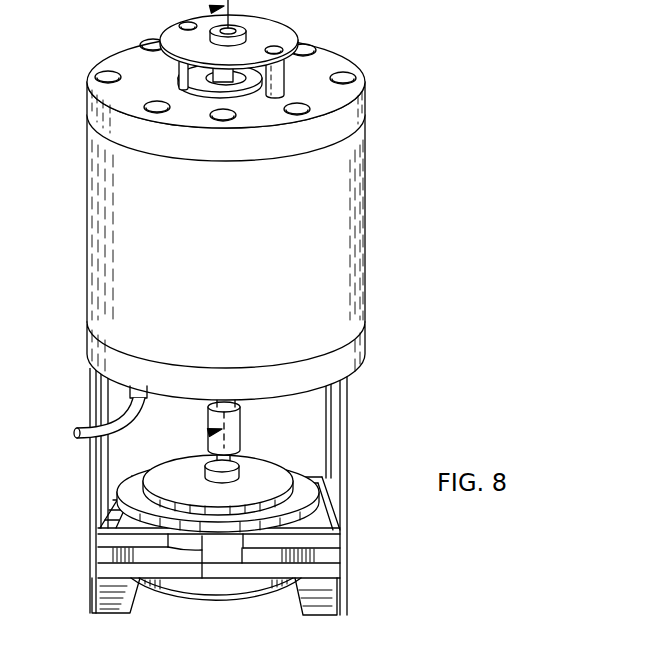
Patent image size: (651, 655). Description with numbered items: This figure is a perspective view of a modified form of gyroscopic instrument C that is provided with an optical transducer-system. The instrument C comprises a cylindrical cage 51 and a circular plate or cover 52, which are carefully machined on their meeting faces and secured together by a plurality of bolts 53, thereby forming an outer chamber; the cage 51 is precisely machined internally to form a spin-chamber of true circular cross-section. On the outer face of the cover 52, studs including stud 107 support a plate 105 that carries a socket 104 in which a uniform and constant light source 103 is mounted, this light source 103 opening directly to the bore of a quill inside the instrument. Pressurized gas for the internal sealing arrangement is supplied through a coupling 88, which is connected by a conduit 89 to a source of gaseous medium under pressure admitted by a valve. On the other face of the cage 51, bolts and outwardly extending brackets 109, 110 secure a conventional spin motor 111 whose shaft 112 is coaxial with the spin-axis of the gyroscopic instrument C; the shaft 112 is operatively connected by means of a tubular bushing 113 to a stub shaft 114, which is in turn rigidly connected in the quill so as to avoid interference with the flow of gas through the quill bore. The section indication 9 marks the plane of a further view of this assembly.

The section line 9- 9 is at (211, 9).
The gyroscopic instrument C is at (268, 218).
The cylindrical cage 51 is at (356, 273).
The circular plate or cover 52 is at (367, 104).
The bolts 53 is at (353, 75).
The light source 103 is at (228, 80).
The socket 104 is at (248, 42).
The plate 105 is at (296, 37).
The stud 107 is at (285, 77).
The coupling 88 is at (144, 398).
The conduit 89 is at (71, 427).
The bracket 110 is at (346, 458).
The bracket 109 is at (94, 595).
The spin motor 111 is at (238, 588).
The shaft 112 is at (231, 467).
The tubular bushing 113 is at (240, 432).
The stub shaft 114 is at (232, 399).